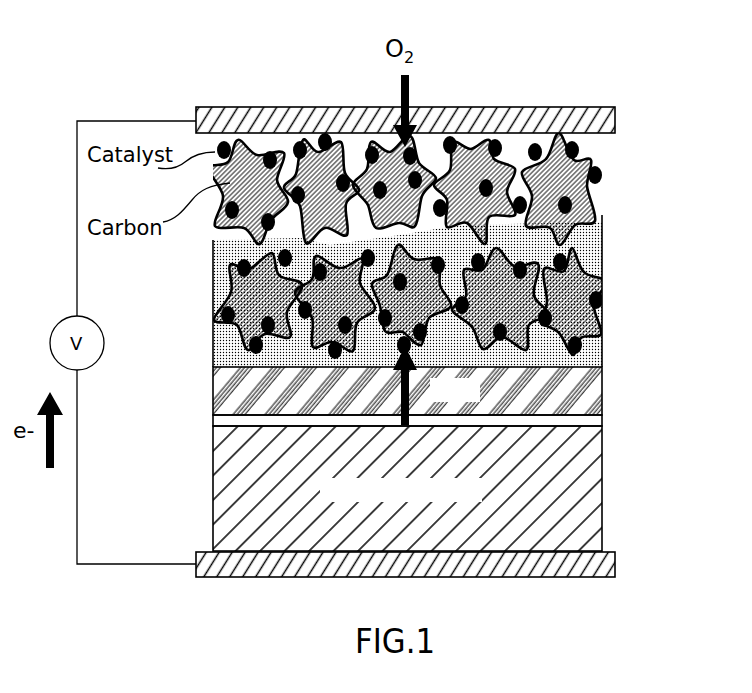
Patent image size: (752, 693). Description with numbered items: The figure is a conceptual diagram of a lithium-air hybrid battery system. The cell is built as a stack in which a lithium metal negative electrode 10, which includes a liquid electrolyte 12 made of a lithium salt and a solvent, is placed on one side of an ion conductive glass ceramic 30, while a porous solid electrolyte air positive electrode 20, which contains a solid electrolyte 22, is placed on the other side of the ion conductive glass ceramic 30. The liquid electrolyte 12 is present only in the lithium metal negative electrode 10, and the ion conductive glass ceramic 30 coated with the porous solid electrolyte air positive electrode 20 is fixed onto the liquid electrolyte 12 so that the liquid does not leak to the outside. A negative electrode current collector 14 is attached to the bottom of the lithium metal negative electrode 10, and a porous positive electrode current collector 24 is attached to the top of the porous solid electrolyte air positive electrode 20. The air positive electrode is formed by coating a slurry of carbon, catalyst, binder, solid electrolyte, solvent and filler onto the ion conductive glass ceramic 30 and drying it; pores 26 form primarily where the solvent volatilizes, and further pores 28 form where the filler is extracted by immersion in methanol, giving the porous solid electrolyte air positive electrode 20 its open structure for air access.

The lithium metal negative electrode 10 is at (592, 460).
The liquid electrolyte 12 is at (595, 420).
The negative electrode current collector 14 is at (615, 553).
The porous solid electrolyte air positive electrode 20 is at (401, 250).
The solid electrolyte 22 is at (213, 253).
The positive electrode current collector 24 is at (520, 118).
The pores 26 is at (343, 235).
The pores 28 is at (360, 220).
The ion conductive glass ceramic 30 is at (592, 390).